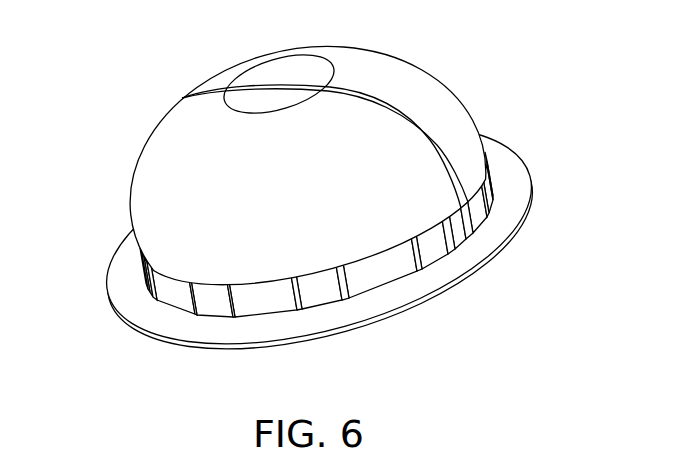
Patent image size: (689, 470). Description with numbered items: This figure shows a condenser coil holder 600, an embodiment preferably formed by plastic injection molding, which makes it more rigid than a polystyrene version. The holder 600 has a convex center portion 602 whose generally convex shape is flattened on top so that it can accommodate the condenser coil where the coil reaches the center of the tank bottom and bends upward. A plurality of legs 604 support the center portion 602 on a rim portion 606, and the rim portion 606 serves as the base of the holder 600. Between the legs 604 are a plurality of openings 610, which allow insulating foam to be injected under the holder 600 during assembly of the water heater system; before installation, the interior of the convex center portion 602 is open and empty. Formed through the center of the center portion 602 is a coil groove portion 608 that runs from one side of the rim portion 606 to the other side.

The condenser coil holder 600 is at (136, 50).
The convex center portion 602 is at (303, 187).
The legs 604 is at (170, 288).
The rim portion 606 is at (507, 212).
The coil groove portion 608 is at (407, 112).
The openings 610 is at (213, 306).